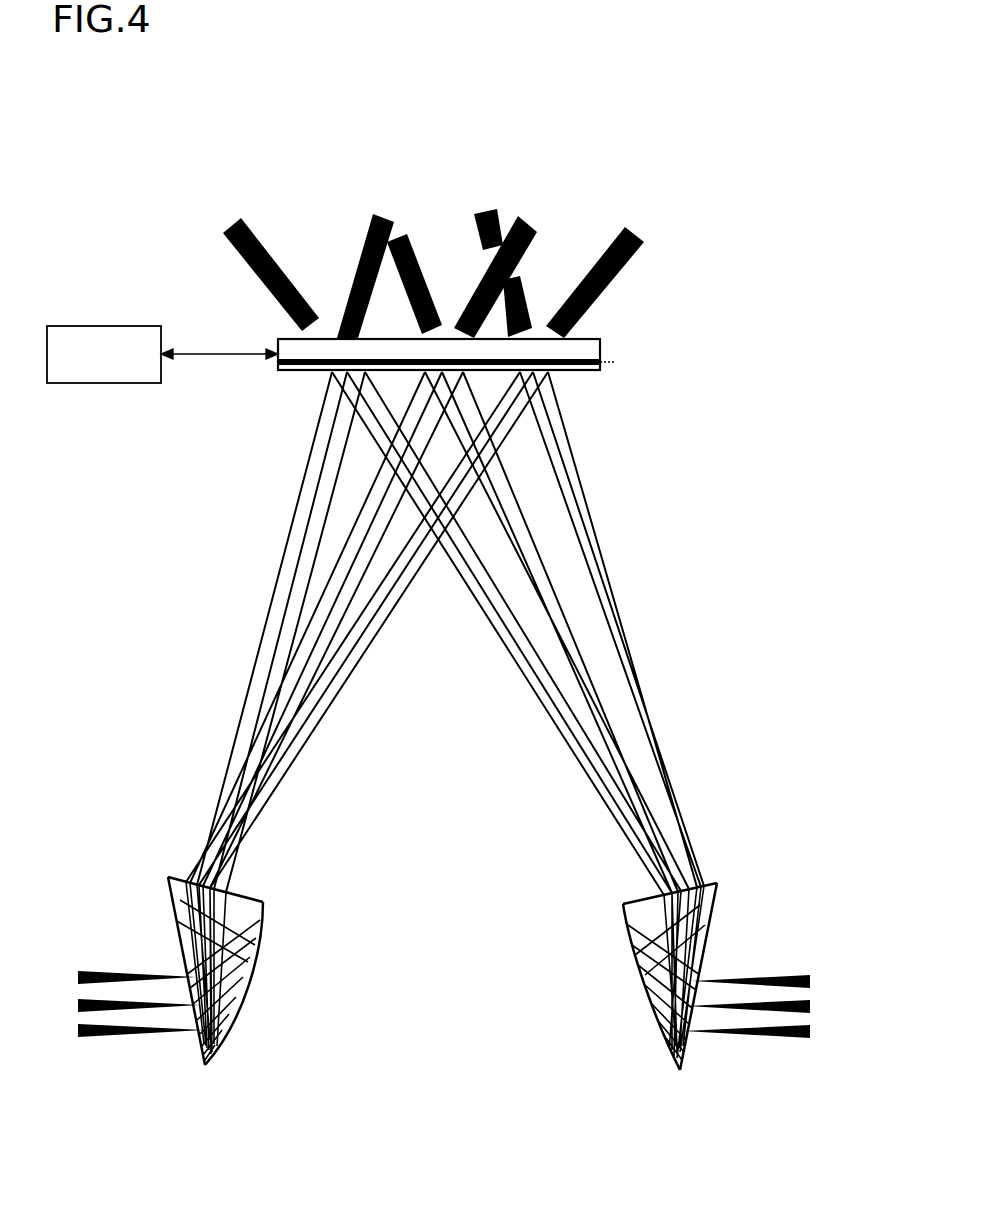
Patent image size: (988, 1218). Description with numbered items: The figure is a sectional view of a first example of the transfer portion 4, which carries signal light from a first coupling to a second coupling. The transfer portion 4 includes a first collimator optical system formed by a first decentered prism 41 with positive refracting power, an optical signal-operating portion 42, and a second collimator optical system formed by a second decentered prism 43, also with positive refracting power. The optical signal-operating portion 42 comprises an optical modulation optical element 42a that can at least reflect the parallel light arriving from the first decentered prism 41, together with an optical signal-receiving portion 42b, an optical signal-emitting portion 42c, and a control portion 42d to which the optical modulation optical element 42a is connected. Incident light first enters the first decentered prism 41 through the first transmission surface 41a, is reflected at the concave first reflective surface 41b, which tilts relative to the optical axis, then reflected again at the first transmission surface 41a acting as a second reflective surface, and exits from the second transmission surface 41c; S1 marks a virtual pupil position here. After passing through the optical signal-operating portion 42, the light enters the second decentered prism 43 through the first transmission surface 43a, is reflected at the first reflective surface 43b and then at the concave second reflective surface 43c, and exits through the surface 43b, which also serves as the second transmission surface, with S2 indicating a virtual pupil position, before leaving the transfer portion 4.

The transfer portion 4 is at (698, 125).
The optical signal-operating portion 42 is at (608, 200).
The optical modulation optical element 42a is at (585, 352).
The optical signal-receiving portion 42b is at (356, 275).
The optical signal-emitting portion 42c is at (247, 236).
The control portion 42d is at (147, 332).
The first decentered prism 41 is at (133, 840).
The first transmission surface 41a is at (178, 942).
The first reflective surface 41b is at (242, 995).
The second transmission surface 41c is at (180, 877).
The second decentered prism 43 is at (745, 855).
The first transmission surface 43a is at (712, 883).
The first reflective surface 43b is at (718, 895).
The second reflective surface 43c is at (625, 933).
The virtual pupil position S1 is at (248, 872).
The virtual pupil position S2 is at (640, 878).